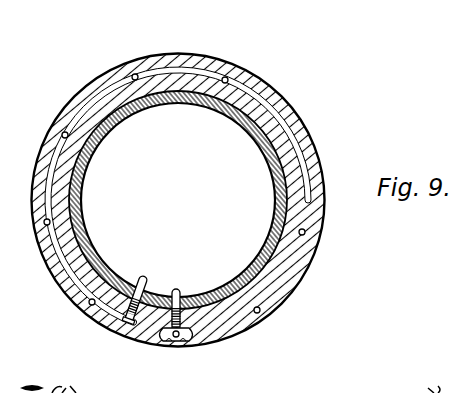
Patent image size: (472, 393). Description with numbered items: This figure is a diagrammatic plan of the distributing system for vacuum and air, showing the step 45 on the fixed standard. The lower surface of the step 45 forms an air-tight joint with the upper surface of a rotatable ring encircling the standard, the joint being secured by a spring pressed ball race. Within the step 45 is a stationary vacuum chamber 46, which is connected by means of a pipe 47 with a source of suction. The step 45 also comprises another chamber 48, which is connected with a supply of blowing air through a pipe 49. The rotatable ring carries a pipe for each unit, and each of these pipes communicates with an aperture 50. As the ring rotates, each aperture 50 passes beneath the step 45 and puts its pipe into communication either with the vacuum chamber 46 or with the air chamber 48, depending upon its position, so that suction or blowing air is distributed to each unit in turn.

The step 45 is at (306, 270).
The stationary vacuum chamber 46 is at (171, 341).
The pipe 47 is at (183, 290).
The chamber 48 is at (97, 94).
The pipe 49 is at (144, 273).
The aperture 50 is at (139, 73).